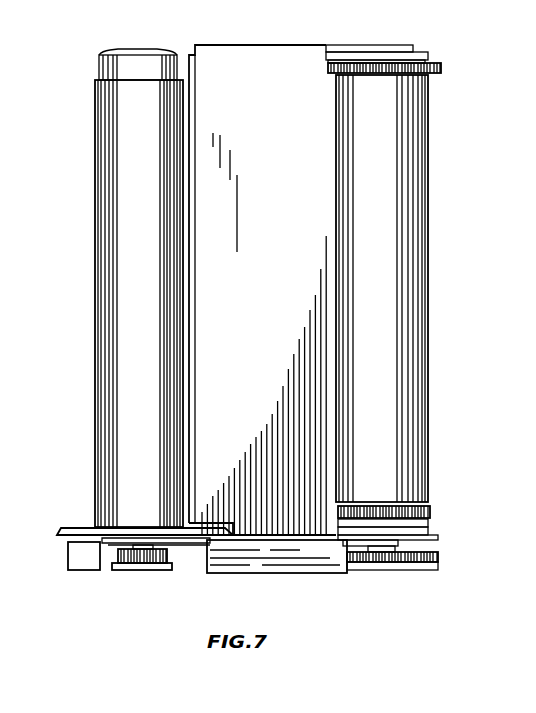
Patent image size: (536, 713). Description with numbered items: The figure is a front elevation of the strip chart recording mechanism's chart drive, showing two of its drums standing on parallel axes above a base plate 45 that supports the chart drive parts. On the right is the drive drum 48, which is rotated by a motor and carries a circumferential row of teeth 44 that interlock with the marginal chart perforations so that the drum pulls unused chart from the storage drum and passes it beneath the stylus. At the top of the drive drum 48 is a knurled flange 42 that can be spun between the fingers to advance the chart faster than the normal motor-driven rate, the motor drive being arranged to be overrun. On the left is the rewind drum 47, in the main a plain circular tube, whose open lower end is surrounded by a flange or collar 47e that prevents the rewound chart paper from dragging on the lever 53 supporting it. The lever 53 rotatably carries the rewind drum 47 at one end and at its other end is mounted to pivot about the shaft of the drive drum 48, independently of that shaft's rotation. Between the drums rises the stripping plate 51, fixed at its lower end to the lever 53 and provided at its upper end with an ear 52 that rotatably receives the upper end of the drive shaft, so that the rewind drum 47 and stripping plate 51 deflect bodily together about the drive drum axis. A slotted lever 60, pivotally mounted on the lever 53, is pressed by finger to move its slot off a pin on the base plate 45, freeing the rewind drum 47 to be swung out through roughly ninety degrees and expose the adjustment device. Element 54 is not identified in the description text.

The knurled flange 42 is at (440, 62).
The circumferential row of teeth 44 is at (432, 511).
The base plate 45 is at (438, 537).
The rewind drum 47 is at (95, 213).
The flange or collar 47e is at (67, 528).
The drive drum 48 is at (428, 213).
The stripping plate 51 is at (271, 92).
The ear 52 is at (361, 46).
The lever 53 is at (433, 546).
The gear 54 is at (437, 566).
The slotted lever 60 is at (68, 558).